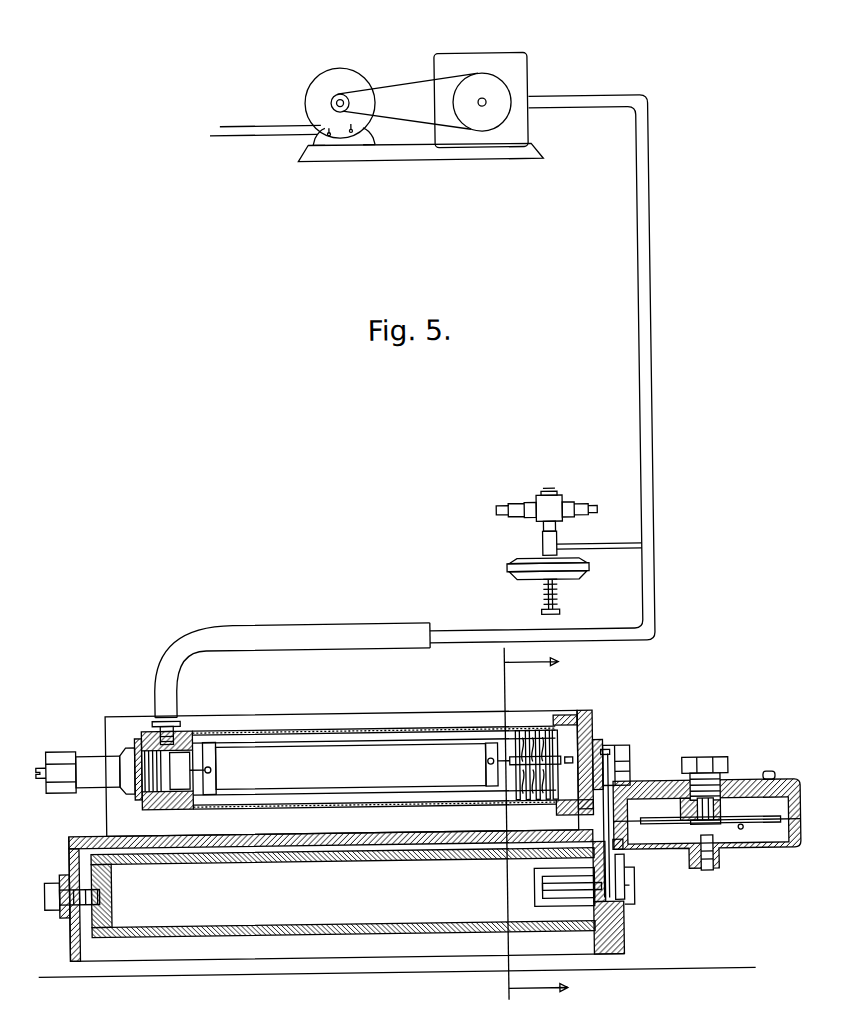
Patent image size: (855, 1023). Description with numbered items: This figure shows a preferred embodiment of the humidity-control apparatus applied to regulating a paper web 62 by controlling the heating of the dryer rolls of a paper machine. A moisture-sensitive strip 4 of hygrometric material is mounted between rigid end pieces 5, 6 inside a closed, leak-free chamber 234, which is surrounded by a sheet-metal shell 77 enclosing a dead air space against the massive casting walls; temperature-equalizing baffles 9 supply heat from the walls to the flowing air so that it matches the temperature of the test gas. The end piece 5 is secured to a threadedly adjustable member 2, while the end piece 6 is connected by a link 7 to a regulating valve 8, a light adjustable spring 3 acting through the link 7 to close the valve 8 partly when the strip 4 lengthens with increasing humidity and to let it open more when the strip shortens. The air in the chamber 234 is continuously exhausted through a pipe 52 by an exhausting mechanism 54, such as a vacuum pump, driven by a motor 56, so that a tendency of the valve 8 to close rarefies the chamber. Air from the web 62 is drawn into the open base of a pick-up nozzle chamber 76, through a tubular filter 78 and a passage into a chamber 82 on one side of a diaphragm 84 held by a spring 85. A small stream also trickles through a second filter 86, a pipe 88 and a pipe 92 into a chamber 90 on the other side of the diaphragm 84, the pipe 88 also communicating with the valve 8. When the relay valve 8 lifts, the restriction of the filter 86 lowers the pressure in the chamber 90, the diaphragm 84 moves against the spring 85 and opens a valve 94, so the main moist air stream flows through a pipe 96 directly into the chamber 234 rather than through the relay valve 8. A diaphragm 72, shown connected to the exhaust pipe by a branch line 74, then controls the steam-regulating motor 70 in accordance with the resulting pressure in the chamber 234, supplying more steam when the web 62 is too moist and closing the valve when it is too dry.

The motor 56 is at (362, 82).
The exhausting mechanism 54 is at (513, 72).
The pipe 52 is at (656, 607).
The motor 70 is at (556, 515).
The branch pipe 74 is at (610, 547).
The diaphragm 72 is at (595, 574).
The sheet-metal shell 77 is at (121, 714).
The member 2 is at (181, 735).
The moisture-sensitive strip 4 is at (328, 765).
The end piece 5 is at (222, 742).
The chamber 234 is at (301, 741).
The end piece 6 is at (492, 732).
The temperature-equalizing baffles 9 is at (546, 736).
The link 7 is at (553, 735).
The spring 3 is at (590, 728).
The valve 8 is at (591, 740).
The pipe 88 is at (624, 864).
The pipe 96 is at (651, 792).
The chamber 82 is at (666, 814).
The valve 94 is at (708, 800).
The diaphragm 84 is at (740, 829).
The chamber 90 is at (756, 838).
The spring 85 is at (721, 840).
The pipe 92 is at (624, 852).
The pick-up nozzle chamber 76 is at (77, 958).
The tubular filter 78 is at (411, 923).
The second filter 86 is at (618, 931).
The paper web 62 is at (298, 973).